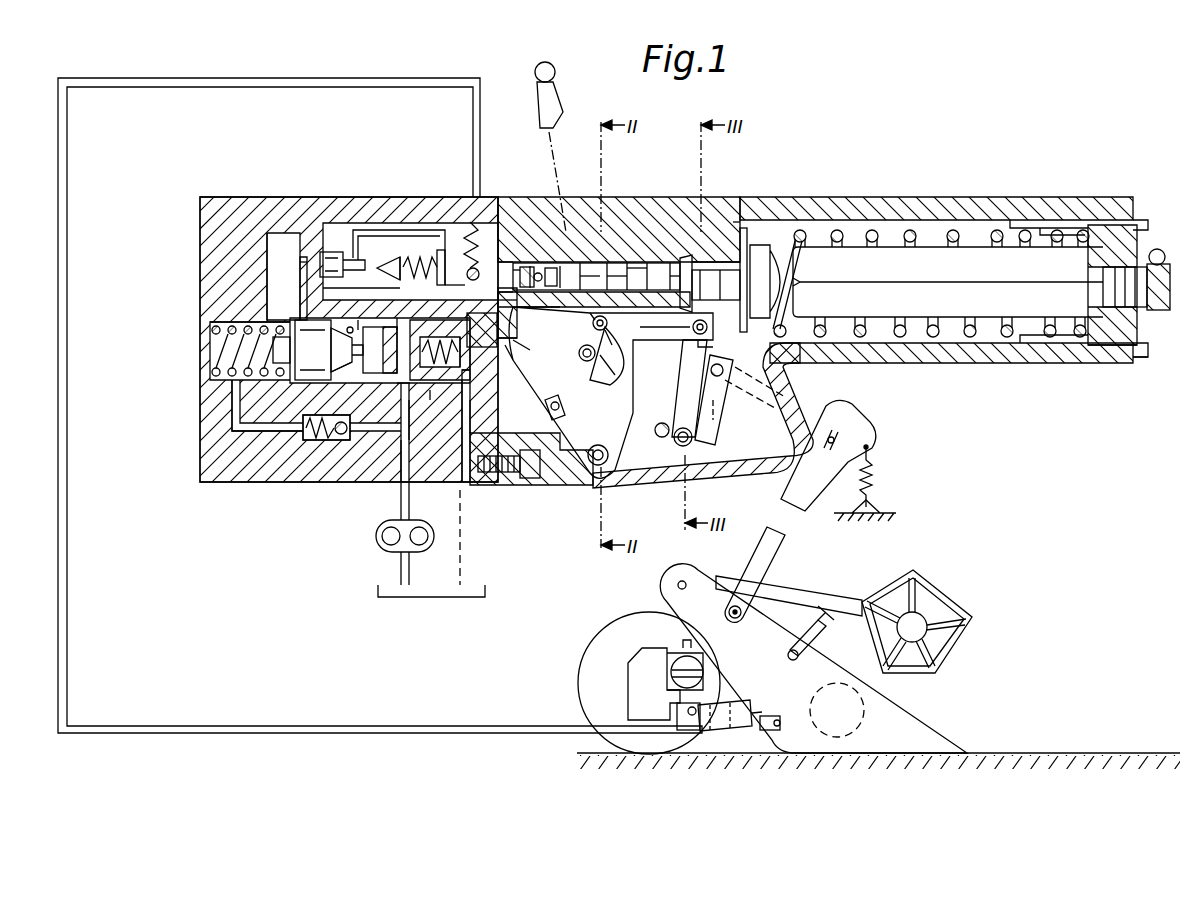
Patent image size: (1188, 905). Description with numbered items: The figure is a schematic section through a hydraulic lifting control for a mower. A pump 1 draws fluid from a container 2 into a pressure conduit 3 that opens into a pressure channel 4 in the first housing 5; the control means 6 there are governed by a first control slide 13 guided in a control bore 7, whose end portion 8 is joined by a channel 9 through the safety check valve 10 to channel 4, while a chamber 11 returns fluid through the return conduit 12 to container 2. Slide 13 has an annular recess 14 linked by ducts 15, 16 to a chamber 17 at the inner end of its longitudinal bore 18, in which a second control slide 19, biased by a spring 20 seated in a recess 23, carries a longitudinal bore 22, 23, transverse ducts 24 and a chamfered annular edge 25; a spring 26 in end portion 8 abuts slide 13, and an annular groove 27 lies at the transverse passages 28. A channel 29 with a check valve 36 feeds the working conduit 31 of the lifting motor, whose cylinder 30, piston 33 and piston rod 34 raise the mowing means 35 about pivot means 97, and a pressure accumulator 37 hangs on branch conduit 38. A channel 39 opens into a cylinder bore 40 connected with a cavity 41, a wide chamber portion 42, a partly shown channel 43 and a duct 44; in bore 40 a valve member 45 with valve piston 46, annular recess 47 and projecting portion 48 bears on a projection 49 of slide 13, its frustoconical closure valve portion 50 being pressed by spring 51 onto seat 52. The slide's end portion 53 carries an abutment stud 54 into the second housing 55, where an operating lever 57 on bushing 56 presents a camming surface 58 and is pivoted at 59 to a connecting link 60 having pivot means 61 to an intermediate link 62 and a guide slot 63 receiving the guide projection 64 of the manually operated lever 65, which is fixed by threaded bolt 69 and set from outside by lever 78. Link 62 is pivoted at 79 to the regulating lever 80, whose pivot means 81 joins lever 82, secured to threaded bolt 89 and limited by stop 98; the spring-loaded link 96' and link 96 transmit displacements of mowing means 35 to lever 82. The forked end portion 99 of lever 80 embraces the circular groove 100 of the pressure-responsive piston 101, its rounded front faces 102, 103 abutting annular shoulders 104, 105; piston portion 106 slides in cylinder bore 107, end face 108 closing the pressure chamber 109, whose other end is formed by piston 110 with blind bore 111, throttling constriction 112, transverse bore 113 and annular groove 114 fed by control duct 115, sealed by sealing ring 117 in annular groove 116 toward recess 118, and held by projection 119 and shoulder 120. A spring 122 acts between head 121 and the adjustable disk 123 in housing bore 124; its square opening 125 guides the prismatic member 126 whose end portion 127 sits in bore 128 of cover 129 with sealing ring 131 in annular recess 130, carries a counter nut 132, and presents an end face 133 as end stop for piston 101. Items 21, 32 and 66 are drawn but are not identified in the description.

The pump 1 is at (380, 536).
The container 2 is at (485, 591).
The pressure conduit 3 is at (401, 500).
The pressure channel 4 is at (401, 460).
The first housing 5 is at (210, 462).
The control means 6 is at (232, 163).
The control bore 7 is at (360, 325).
The end portion 8 is at (210, 322).
The channel 9 is at (236, 405).
The check valve 10 is at (340, 435).
The chamber 11 is at (480, 480).
The return conduit 12 is at (461, 550).
The first control slide 13 is at (300, 330).
The annular recess 14 is at (352, 378).
The duct 15 is at (352, 342).
The duct 16 is at (349, 325).
The chamber 17 is at (332, 345).
The longitudinal bore 18 is at (465, 405).
The second control slide 19 is at (380, 380).
The spring 20 is at (470, 350).
The seat insert 21 is at (465, 362).
The longitudinal bore 22 is at (442, 380).
The recess 23 is at (463, 385).
The transverse ducts 24 is at (412, 400).
The chamfered annular edge 25 is at (432, 400).
The spring 26 is at (212, 370).
The annular groove 27 is at (400, 385).
The transverse passages 28 is at (400, 322).
The channel 29 is at (480, 320).
The cylinder 30 is at (700, 728).
The working conduit 31 is at (481, 103).
The bracket 32 is at (628, 672).
The piston 33 is at (722, 712).
The piston rod 34 is at (760, 728).
The mowing means 35 is at (945, 750).
The check valve 36 is at (464, 238).
The pressure accumulator 37 is at (680, 665).
The branch conduit 38 is at (633, 695).
The channel 39 is at (462, 250).
The cylinder bore 40 is at (386, 252).
The cavity 41 is at (267, 245).
The wide chamber portion 42 is at (440, 250).
The channel 43 is at (467, 270).
The duct 44 is at (323, 290).
The valve member 45 is at (341, 175).
The valve piston 46 is at (310, 250).
The annular recess 47 is at (333, 252).
The projecting portion 48 is at (297, 250).
The projection 49 is at (300, 262).
The frustoconical closure valve portion 50 is at (418, 255).
The spring 51 is at (447, 250).
The seat 52 is at (400, 257).
The end portion 53 is at (466, 375).
The abutment stud 54 is at (513, 360).
The second housing 55 is at (823, 210).
The bushing 56 is at (600, 470).
The operating lever 57 is at (571, 392).
The camming surface 58 is at (515, 345).
The pivot 59 is at (580, 353).
The connecting link 60 is at (585, 328).
The pivot means 61 is at (592, 320).
The intermediate link 62 is at (678, 340).
The guide slot 63 is at (548, 415).
The guide projection 64 is at (562, 410).
The manually operated lever 65 is at (618, 370).
The cam surface 66 is at (630, 342).
The threaded bolt 69 is at (622, 362).
The manually operated lever 78 is at (556, 76).
The pivot 79 is at (705, 340).
The regulating lever 80 is at (678, 400).
The pivot means 81 is at (693, 437).
The lever 82 is at (708, 420).
The threaded bolt 89 is at (720, 378).
The link 96 is at (767, 574).
The spring-loaded link 96' is at (734, 427).
The pivot means 97 is at (678, 582).
The stop 98 is at (658, 437).
The forked end portion 99 is at (707, 327).
The circular groove 100 is at (705, 262).
The pressure-responsive piston 101 is at (655, 263).
The rounded front face 102 is at (675, 263).
The rounded front face 103 is at (738, 230).
The annular shoulder 104 is at (680, 258).
The annular shoulder 105 is at (743, 228).
The piston portion 106 is at (610, 263).
The cylinder bore 107 is at (630, 262).
The end face 108 is at (580, 262).
The pressure chamber 109 is at (548, 300).
The piston 110 is at (572, 262).
The blind bore 111 is at (552, 282).
The throttling constriction 112 is at (552, 128).
The transverse bore 113 is at (546, 262).
The annular groove 114 is at (562, 200).
The control duct 115 is at (505, 262).
The annular groove 116 is at (522, 262).
The sealing ring 117 is at (530, 262).
The recess 118 is at (500, 262).
The projection 119 is at (530, 315).
The shoulder 120 is at (510, 278).
The head 121 is at (790, 235).
The spring 122 is at (985, 362).
The adjustable disk 123 is at (1100, 228).
The housing bore 124 is at (1030, 220).
The square opening 125 is at (1070, 225).
The square prismatic member 126 is at (855, 250).
The end portion 127 is at (1140, 310).
The bore 128 is at (1100, 363).
The housing cover 129 is at (1140, 220).
The annular recess 130 is at (1155, 312).
The sealing ring 131 is at (1135, 363).
The counter nut 132 is at (1160, 250).
The end face 133 is at (762, 245).